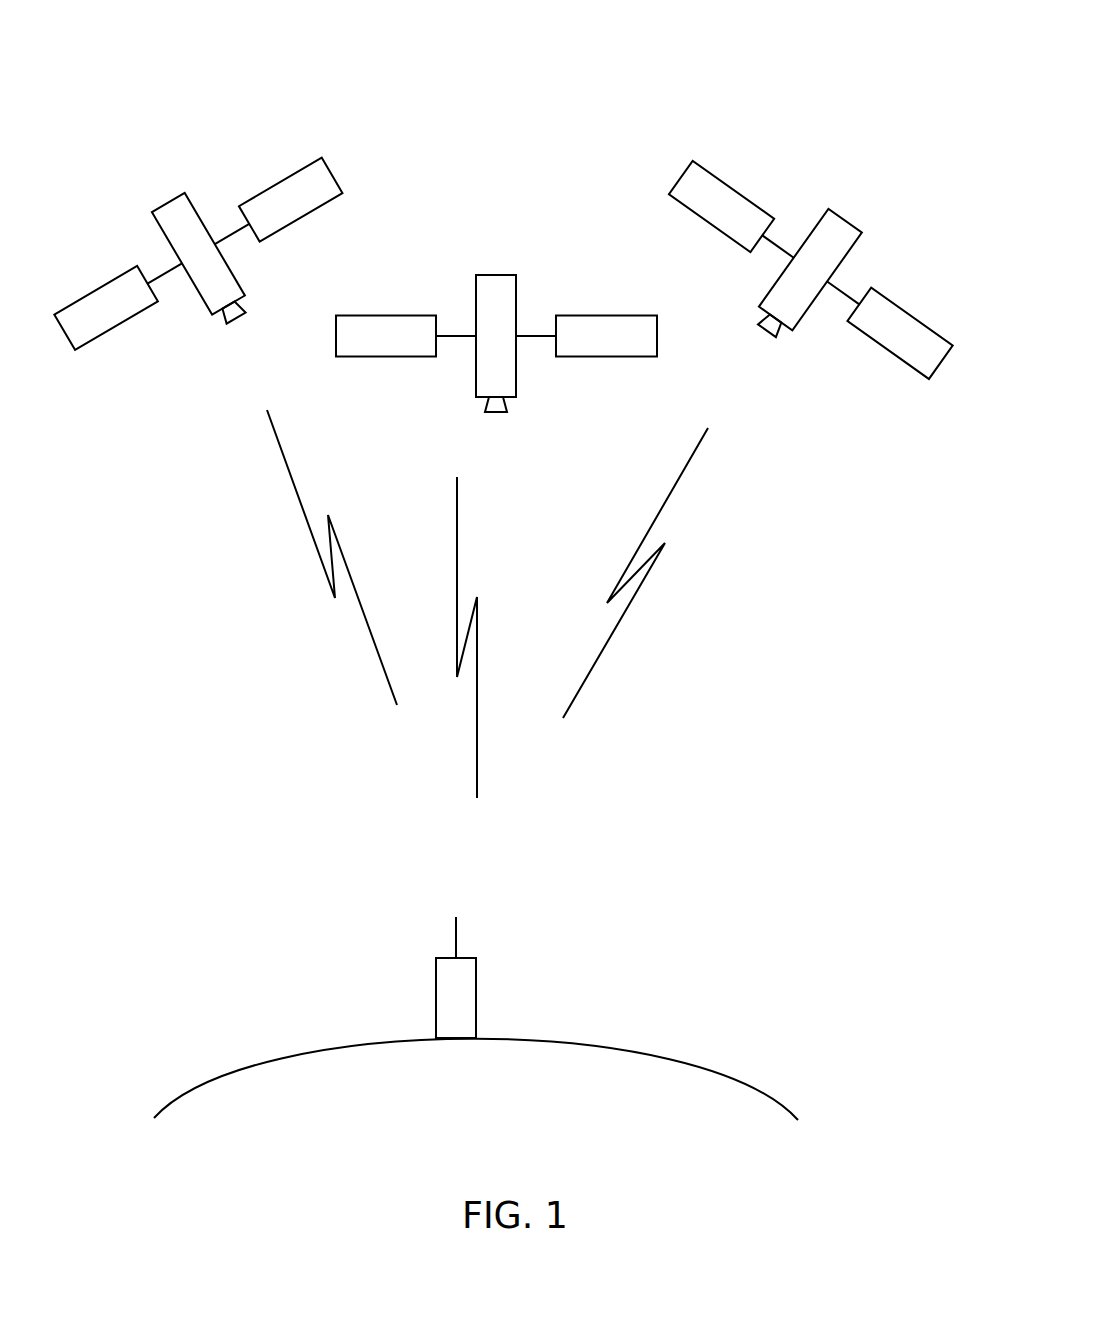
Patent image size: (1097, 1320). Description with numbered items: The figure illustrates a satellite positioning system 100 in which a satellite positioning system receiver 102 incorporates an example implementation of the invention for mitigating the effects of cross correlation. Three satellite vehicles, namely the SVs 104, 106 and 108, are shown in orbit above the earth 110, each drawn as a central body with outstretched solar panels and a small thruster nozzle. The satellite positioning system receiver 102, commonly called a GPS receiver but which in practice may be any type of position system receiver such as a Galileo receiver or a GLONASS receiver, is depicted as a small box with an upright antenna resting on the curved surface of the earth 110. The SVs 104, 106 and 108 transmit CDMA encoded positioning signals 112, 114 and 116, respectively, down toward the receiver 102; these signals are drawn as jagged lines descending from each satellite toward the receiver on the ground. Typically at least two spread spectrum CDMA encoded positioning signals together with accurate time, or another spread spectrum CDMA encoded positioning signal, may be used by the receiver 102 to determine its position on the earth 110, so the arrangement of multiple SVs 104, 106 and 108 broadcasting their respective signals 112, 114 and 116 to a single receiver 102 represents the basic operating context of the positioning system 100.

The satellite positioning system 100 is at (505, 570).
The satellite positioning system receiver 102 is at (476, 997).
The satellite vehicle 104 is at (185, 193).
The satellite vehicle 106 is at (476, 275).
The satellite vehicle 108 is at (715, 173).
The earth 110 is at (499, 1090).
The CDMA encoded positioning signal 112 is at (300, 497).
The CDMA encoded positioning signal 114 is at (457, 537).
The CDMA encoded positioning signal 116 is at (667, 507).